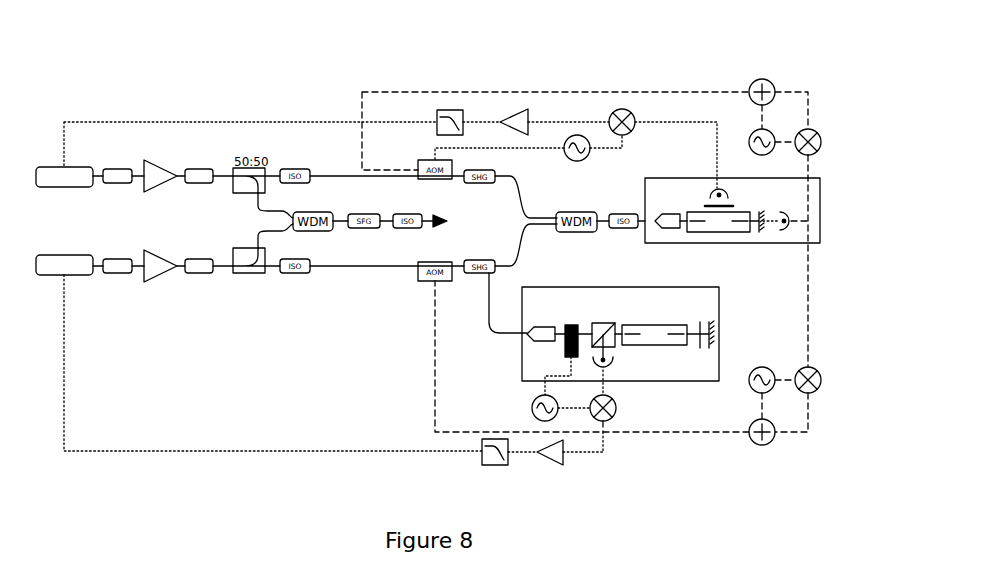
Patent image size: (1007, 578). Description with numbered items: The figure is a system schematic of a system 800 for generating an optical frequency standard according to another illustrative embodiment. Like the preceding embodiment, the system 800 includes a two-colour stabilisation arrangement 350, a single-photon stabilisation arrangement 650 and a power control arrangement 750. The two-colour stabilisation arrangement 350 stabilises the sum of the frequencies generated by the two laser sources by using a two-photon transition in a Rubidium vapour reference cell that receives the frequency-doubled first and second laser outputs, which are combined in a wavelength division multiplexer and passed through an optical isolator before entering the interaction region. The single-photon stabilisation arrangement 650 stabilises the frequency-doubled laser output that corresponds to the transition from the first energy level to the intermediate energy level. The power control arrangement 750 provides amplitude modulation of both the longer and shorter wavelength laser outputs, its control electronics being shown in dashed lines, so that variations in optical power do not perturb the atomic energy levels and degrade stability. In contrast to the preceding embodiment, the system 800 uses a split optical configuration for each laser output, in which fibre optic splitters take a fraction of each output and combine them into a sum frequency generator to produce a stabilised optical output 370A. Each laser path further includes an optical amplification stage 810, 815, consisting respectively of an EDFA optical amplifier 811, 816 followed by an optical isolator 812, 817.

The system for generating an optical frequency standard 800 is at (114, 95).
The optical amplification stage 810 is at (148, 138).
The EDFA optical amplifier 811 is at (138, 193).
The optical isolator 812 is at (200, 184).
The optical amplification stage 815 is at (155, 303).
The EDFA optical amplifier 816 is at (138, 282).
The optical isolator 817 is at (200, 274).
The two-colour stabilisation arrangement 350 is at (678, 144).
The power control arrangement 750 is at (698, 93).
The stabilised optical output 370A is at (454, 233).
The single-photon stabilisation arrangement 650 is at (640, 397).